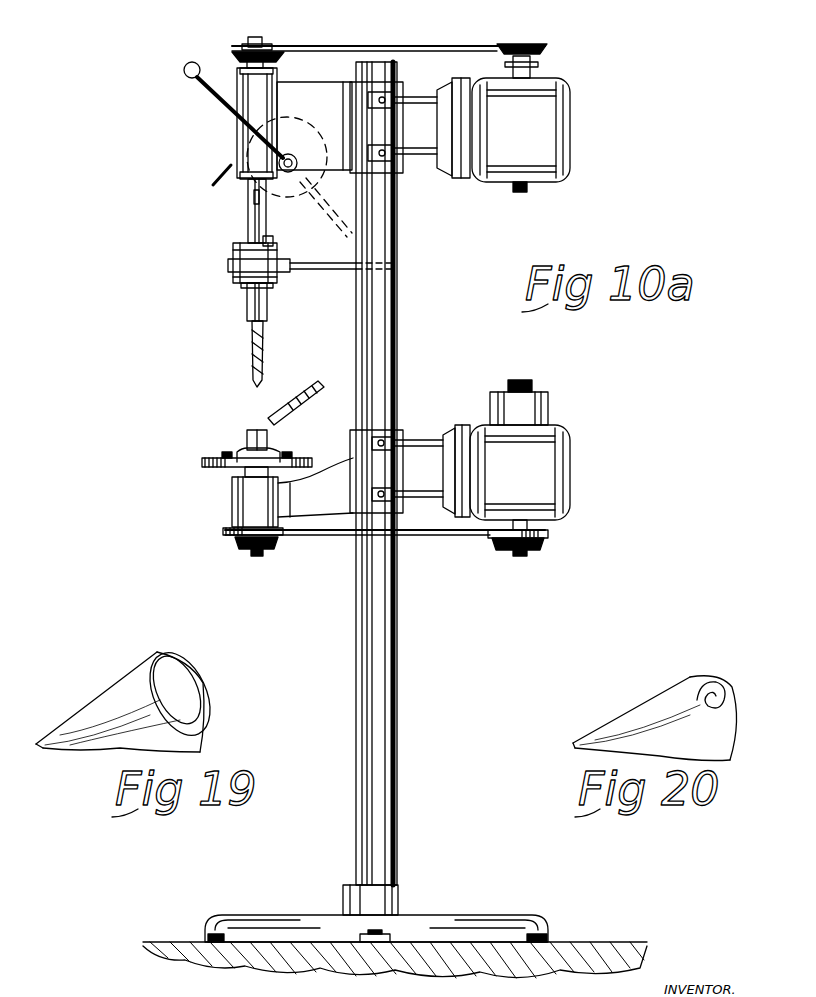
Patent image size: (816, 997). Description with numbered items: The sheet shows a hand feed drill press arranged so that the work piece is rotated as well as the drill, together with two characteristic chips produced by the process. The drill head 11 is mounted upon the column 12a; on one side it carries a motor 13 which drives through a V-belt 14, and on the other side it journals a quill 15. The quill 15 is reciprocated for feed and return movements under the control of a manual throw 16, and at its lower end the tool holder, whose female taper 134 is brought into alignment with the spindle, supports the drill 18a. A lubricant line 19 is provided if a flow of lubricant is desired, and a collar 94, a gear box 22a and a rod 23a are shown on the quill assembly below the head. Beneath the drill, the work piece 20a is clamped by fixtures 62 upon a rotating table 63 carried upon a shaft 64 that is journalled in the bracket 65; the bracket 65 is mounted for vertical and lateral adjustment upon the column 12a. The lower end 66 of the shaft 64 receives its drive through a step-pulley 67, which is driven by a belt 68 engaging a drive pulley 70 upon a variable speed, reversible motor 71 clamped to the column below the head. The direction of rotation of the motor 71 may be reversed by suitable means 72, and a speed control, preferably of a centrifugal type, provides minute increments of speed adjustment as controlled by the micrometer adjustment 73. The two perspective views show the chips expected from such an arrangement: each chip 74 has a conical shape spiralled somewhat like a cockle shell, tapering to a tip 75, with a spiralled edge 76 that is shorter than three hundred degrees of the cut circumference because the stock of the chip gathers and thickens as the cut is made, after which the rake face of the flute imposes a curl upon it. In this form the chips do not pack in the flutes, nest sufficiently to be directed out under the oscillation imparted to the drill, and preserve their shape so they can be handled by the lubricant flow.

In FIG. 10A, the drill head 11 is at (300, 76).
In FIG. 10A, the column 12a is at (378, 330).
In FIG. 10A, the motor 13 is at (567, 122).
In FIG. 10A, the V-belt 14 is at (400, 46).
In FIG. 10A, the quill 15 is at (248, 205).
In FIG. 10A, the manual throw 16 is at (208, 100).
In FIG. 10A, the drill 18a is at (266, 352).
In FIG. 10A, the lubricant line 19 is at (317, 391).
In FIG. 10A, the work piece 20a is at (264, 441).
In FIG. 10A, the gear box 22a is at (228, 262).
In FIG. 10A, the rod 23a is at (320, 272).
In FIG. 10A, the fixtures 62 is at (248, 452).
In FIG. 10A, the rotating table 63 is at (205, 463).
In FIG. 10A, the shaft 64 is at (246, 480).
In FIG. 10A, the bracket 65 is at (312, 502).
In FIG. 10A, the lower end of the shaft 66 is at (258, 556).
In FIG. 10A, the step-pulley 67 is at (232, 543).
In FIG. 10A, the belt 68 is at (448, 540).
In FIG. 10A, the drive pulley 70 is at (548, 536).
In FIG. 10A, the variable speed, reversible motor 71 is at (553, 468).
In FIG. 10A, the reversing means 72 is at (553, 404).
In FIG. 10A, the micrometer adjustment 73 is at (532, 378).
In FIG. 19, the chip 74 is at (88, 702).
In FIG. 20, the chip 74 is at (617, 717).
In FIG. 19, the cone tip 75 is at (36, 744).
In FIG. 20, the cone tip 75 is at (573, 743).
In FIG. 19, the spiralled edge 76 is at (188, 662).
In FIG. 20, the spiralled edge 76 is at (720, 688).
In FIG. 10A, the collar 94 is at (272, 245).
In FIG. 10A, the female taper 134 is at (250, 307).